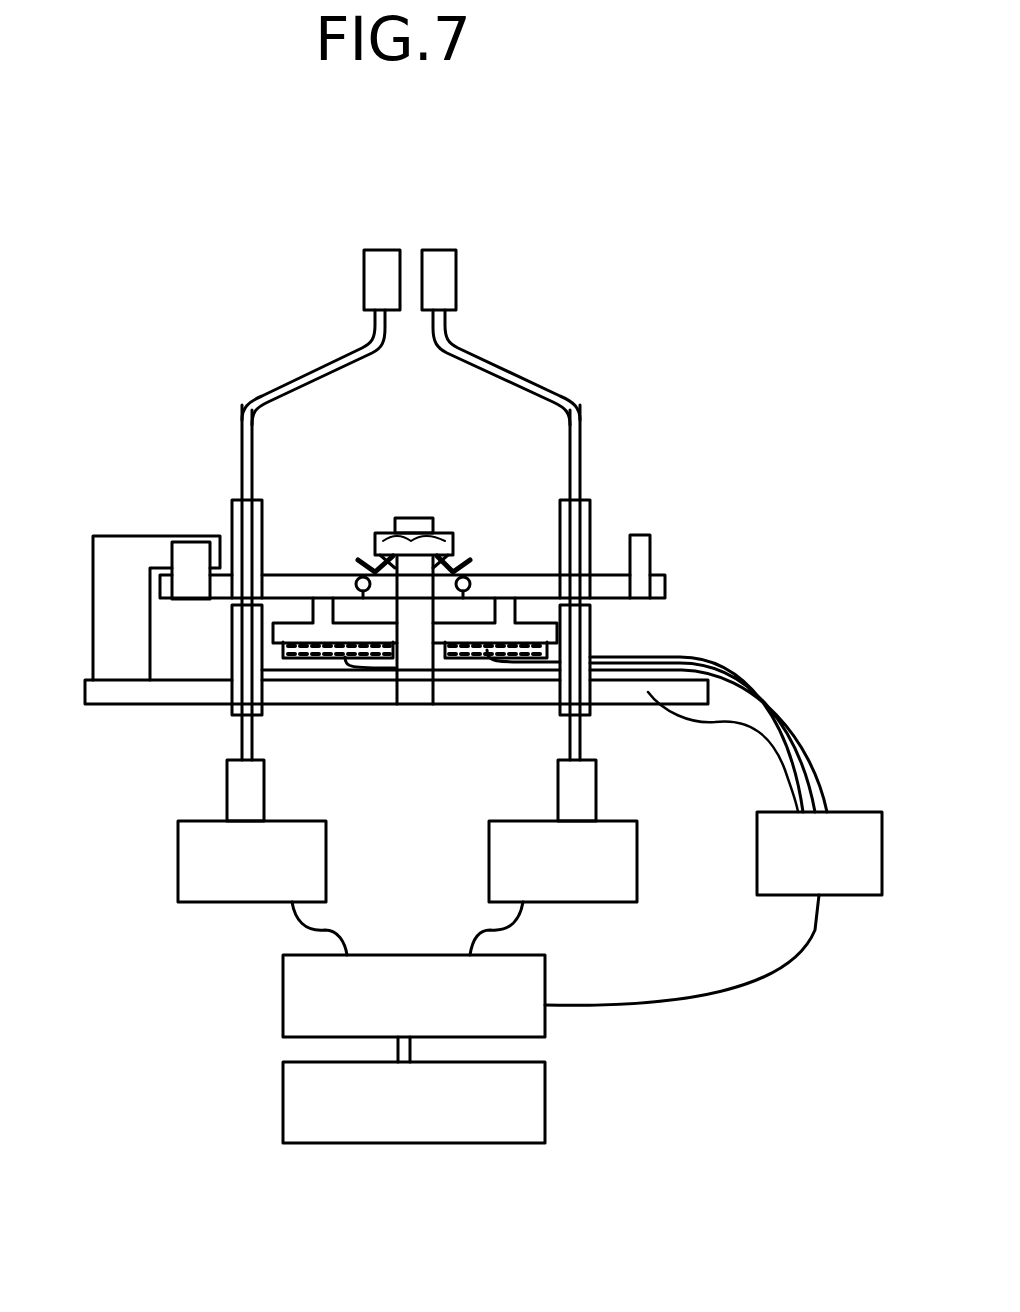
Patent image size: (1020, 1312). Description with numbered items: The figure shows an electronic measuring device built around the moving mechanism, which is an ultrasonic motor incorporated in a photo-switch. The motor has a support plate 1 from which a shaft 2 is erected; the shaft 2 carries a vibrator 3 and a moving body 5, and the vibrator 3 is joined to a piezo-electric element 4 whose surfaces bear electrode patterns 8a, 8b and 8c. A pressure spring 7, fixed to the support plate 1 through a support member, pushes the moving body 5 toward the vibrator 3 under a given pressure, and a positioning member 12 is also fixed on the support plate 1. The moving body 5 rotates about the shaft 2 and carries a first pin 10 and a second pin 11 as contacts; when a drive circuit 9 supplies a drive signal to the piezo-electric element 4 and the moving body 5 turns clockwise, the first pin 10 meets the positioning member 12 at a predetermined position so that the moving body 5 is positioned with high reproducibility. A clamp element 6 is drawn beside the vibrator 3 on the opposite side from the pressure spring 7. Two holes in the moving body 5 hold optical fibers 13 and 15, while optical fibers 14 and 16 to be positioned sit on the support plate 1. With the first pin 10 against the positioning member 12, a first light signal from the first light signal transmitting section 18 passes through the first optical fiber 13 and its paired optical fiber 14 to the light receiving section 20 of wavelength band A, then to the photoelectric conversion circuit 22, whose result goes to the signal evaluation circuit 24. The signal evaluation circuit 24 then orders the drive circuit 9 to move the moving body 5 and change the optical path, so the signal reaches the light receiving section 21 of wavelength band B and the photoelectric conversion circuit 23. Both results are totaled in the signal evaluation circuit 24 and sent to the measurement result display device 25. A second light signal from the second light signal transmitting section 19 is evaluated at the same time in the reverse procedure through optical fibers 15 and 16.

The support plate 1 is at (458, 693).
The shaft 2 is at (413, 693).
The vibrator 3 is at (487, 630).
The piezo-electric element 4 is at (328, 655).
The moving body 5 is at (270, 587).
The left clamp 6 is at (345, 562).
The pressure spring 7 is at (465, 558).
The electrode pattern 8a is at (547, 647).
The electrode pattern 8b is at (523, 657).
The electrode pattern 8c is at (293, 655).
The drive circuit 9 is at (843, 882).
The first pin 10 is at (190, 558).
The second pin 11 is at (643, 550).
The positioning member 12 is at (145, 552).
The first optical fiber 13 is at (247, 523).
The optical fiber 14 is at (230, 705).
The optical fiber 15 is at (577, 513).
The optical fiber 16 is at (585, 722).
The first light signal transmitting section 18 is at (375, 280).
The second light signal transmitting section 19 is at (445, 282).
The light receiving section of wavelength band A 20 is at (236, 797).
The light receiving section of wavelength band B 21 is at (578, 793).
The photoelectric conversion circuit of wavelength band A 22 is at (228, 892).
The photoelectric conversion circuit of wavelength band B 23 is at (583, 890).
The signal evaluation circuit 24 is at (283, 1015).
The measurement result display device 25 is at (283, 1108).